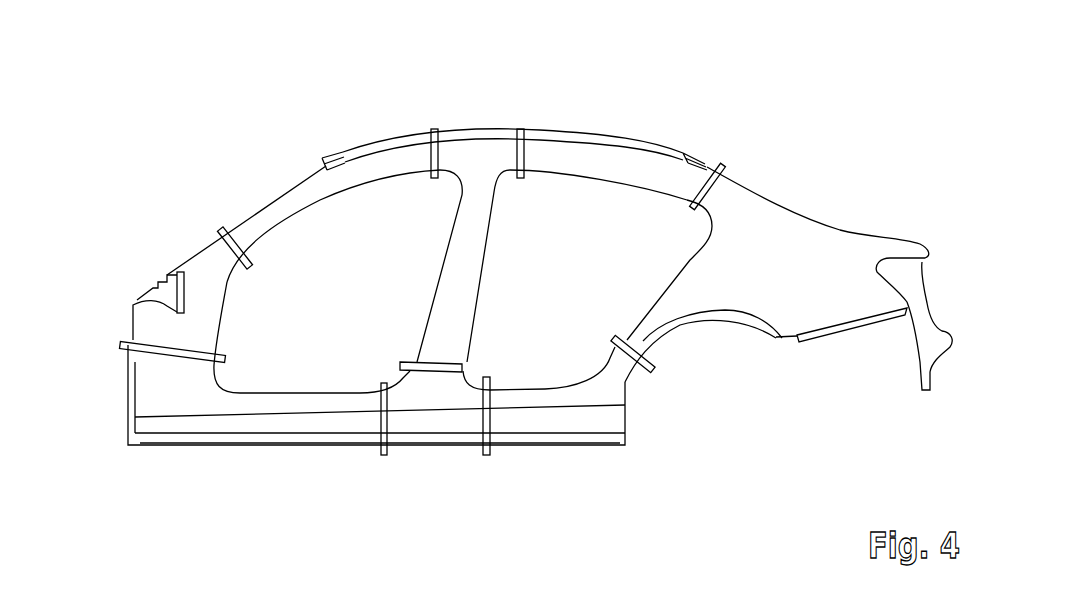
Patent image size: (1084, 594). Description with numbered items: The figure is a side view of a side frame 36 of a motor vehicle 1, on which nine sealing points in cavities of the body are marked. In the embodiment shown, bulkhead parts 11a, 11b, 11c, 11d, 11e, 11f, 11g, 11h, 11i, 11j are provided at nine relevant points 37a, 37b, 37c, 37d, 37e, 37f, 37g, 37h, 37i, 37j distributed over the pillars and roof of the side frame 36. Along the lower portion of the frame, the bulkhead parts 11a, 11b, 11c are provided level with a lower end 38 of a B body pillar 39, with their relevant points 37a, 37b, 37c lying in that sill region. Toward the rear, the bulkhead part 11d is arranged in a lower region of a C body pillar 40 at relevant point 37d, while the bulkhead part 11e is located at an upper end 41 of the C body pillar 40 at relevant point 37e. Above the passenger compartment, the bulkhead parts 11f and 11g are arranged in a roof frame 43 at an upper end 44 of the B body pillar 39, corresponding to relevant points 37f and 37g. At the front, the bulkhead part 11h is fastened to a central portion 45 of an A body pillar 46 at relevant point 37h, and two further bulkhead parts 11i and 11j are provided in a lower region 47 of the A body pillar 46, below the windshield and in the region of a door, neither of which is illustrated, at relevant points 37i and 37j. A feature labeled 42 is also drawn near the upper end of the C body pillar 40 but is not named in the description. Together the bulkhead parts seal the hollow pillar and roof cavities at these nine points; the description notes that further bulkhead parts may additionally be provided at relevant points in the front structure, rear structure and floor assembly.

The motor vehicle 1 is at (540, 298).
The side frame 36 is at (540, 298).
The bulkhead part 11a is at (338, 459).
The bulkhead part 11b is at (561, 439).
The bulkhead part 11c is at (392, 329).
The bulkhead part 11d is at (746, 379).
The bulkhead part 11e is at (821, 178).
The bulkhead part 11f is at (609, 129).
The bulkhead part 11g is at (337, 129).
The bulkhead part 11h is at (220, 203).
The bulkhead part 11i is at (125, 254).
The bulkhead part 11j is at (156, 421).
The relevant point 37a is at (384, 457).
The relevant point 37b is at (492, 452).
The relevant point 37c is at (407, 362).
The relevant point 37d is at (655, 370).
The relevant point 37e is at (728, 172).
The relevant point 37f is at (524, 132).
The relevant point 37g is at (432, 133).
The relevant point 37h is at (222, 231).
The relevant point 37i is at (150, 300).
The relevant point 37j is at (174, 362).
The lower end of B body pillar 38 is at (437, 423).
The B body pillar 39 is at (411, 282).
The C body pillar 40 is at (782, 285).
The upper end of C body pillar 41 is at (746, 379).
The C-pillar 42 is at (821, 178).
The roof frame 43 is at (469, 129).
The upper end of B body pillar 44 is at (472, 157).
The central portion of A body pillar 45 is at (220, 203).
The A body pillar 46 is at (176, 319).
The lower region of A body pillar 47 is at (141, 348).